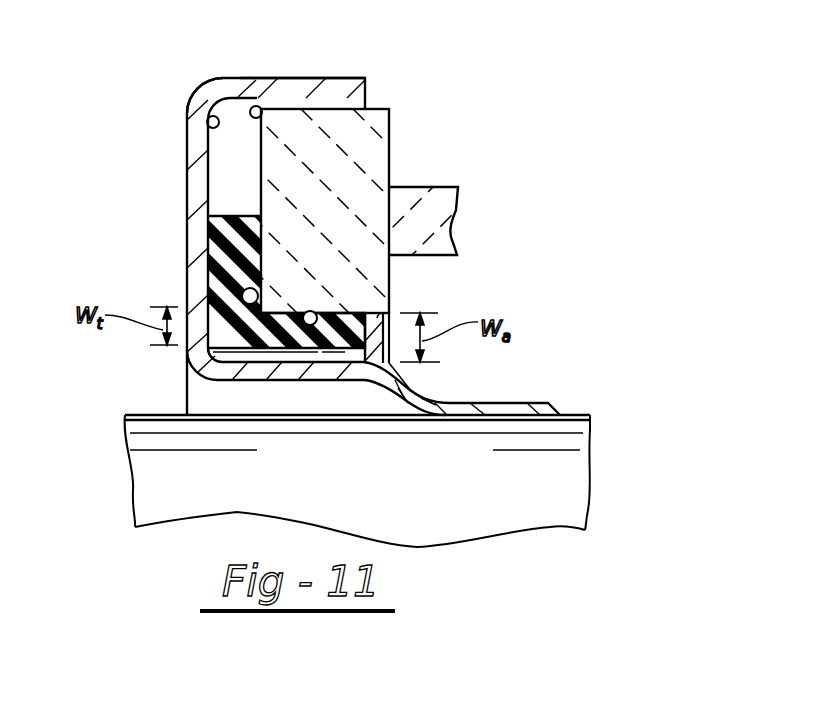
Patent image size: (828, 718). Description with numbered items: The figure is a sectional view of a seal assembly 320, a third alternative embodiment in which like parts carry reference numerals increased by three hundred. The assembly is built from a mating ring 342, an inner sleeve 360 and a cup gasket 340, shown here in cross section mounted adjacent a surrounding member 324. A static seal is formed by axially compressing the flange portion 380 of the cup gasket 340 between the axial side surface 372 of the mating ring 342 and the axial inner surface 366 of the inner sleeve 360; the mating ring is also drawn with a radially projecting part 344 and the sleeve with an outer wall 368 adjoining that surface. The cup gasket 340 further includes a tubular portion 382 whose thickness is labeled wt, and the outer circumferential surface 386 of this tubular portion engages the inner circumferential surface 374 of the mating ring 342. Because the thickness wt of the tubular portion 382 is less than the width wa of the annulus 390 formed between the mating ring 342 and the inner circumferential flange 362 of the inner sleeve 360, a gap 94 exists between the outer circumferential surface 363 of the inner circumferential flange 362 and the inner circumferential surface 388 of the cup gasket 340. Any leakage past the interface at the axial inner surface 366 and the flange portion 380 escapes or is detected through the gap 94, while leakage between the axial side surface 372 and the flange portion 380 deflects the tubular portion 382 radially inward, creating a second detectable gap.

The gap 94 is at (250, 357).
The seal assembly 320 is at (560, 318).
The housing bore member 324 is at (560, 490).
The cup gasket 340 is at (242, 216).
The mating ring 342 is at (385, 137).
The radial flange 344 is at (448, 193).
The inner sleeve 360 is at (552, 403).
The inner circumferential flange 362 is at (213, 370).
The outer circumferential surface 363 is at (270, 357).
The axial inner surface 366 is at (197, 105).
The top wall 368 is at (247, 86).
The axial side surface 372 is at (262, 106).
The inner circumferential surface 374 is at (408, 396).
The flange portion 380 is at (213, 232).
The tubular portion 382 is at (243, 300).
The outer circumferential surface 386 is at (316, 316).
The inner circumferential surface 388 is at (314, 353).
The annulus 390 is at (375, 352).